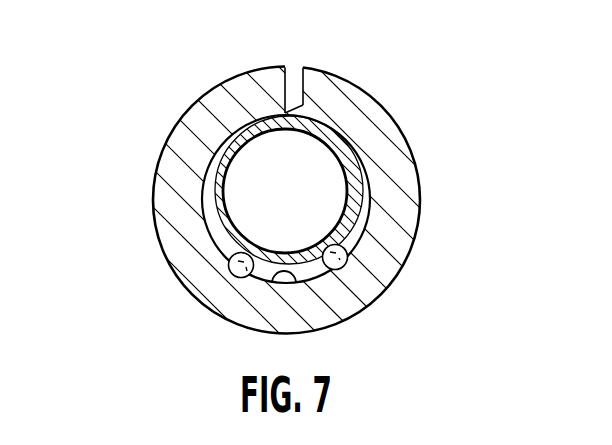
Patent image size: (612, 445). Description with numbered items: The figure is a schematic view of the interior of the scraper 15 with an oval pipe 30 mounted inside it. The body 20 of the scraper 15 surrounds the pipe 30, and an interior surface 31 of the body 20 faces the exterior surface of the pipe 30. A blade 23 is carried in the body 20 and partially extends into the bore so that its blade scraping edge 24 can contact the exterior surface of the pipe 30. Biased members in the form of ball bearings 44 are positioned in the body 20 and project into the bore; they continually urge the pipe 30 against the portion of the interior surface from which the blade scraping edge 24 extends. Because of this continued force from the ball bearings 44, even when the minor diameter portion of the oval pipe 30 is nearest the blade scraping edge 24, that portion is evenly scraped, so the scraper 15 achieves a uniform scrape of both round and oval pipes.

The scraper 15 is at (306, 222).
The body 20 is at (410, 141).
The blade 23 is at (297, 67).
The blade scraping edge 24 is at (285, 113).
The pipe 30 is at (207, 198).
The interior surface 31 is at (284, 278).
The ball bearings 44 is at (232, 272).